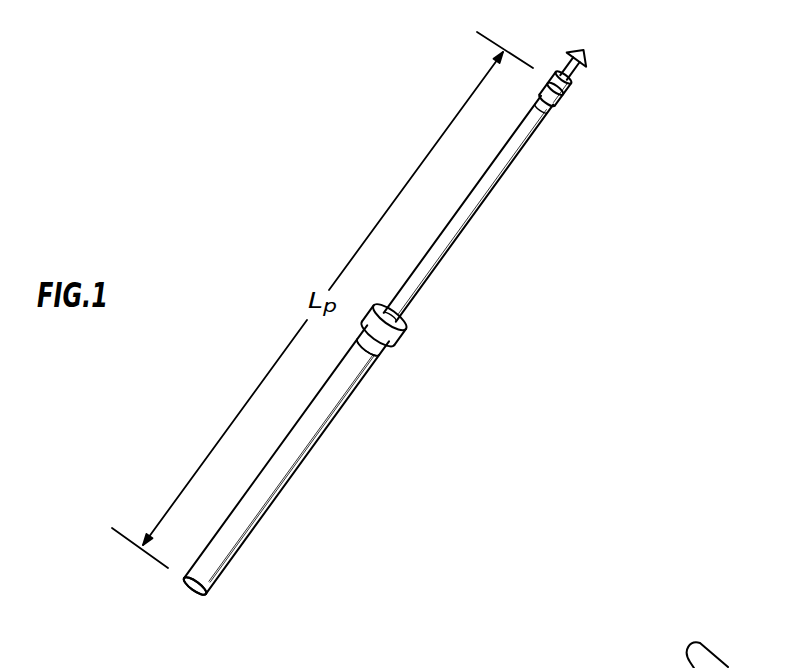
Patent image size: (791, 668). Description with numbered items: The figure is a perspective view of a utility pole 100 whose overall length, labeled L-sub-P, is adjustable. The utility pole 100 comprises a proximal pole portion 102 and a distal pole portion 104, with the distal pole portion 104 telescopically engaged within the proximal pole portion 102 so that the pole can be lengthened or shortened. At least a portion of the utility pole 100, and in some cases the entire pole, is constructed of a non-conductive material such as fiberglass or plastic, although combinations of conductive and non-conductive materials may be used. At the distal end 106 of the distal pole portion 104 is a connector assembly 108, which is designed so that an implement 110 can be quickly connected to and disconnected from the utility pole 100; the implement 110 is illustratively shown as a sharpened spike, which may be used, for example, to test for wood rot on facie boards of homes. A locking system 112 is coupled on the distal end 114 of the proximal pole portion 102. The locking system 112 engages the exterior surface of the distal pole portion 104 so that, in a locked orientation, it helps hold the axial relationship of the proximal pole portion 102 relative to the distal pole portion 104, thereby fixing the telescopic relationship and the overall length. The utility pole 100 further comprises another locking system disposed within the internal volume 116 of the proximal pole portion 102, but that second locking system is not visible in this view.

The utility pole 100 is at (262, 121).
The proximal pole portion 102 is at (268, 511).
The distal pole portion 104 is at (473, 218).
The distal end 106 is at (583, 145).
The connector assembly 108 is at (571, 102).
The implement 110 is at (586, 53).
The locking system 112 is at (417, 338).
The distal end 114 is at (398, 352).
The internal volume 116 is at (195, 592).